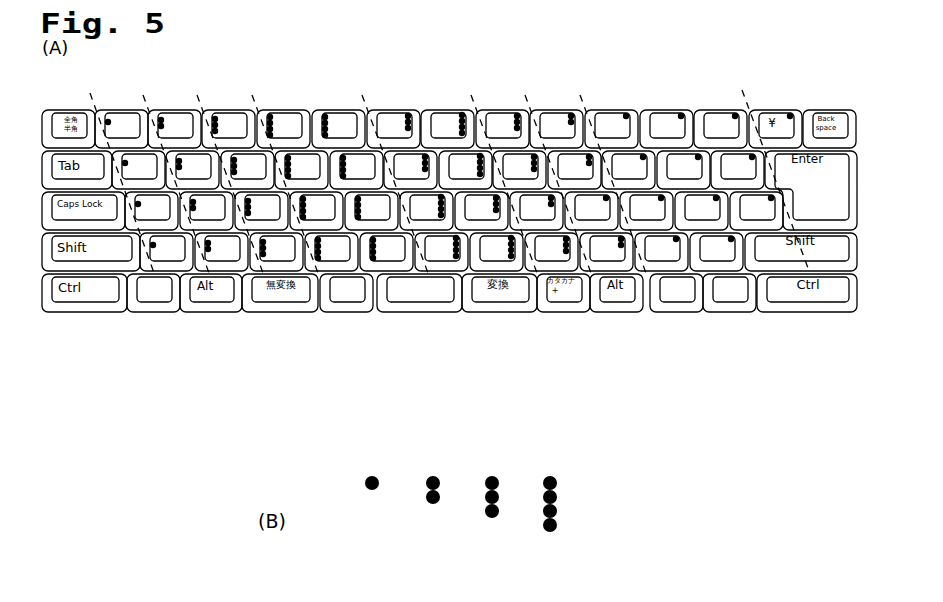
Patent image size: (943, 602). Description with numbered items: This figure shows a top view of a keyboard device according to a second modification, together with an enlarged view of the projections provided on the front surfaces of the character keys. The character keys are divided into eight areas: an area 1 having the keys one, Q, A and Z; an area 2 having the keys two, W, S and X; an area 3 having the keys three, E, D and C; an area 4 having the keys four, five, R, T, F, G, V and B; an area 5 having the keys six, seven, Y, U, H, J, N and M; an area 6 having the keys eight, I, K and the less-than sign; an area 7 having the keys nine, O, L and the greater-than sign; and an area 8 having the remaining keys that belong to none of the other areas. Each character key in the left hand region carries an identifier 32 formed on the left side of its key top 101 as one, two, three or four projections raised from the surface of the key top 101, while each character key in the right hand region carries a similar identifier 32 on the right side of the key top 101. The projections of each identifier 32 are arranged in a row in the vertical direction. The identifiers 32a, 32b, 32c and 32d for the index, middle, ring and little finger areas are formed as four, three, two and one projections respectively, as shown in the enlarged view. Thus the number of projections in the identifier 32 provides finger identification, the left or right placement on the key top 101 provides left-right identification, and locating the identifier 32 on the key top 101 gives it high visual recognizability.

The area 1 is at (148, 85).
The area 2 is at (150, 85).
The area 3 is at (250, 85).
The area 4 is at (252, 85).
The area 5 is at (463, 85).
The area 6 is at (520, 85).
The area 7 is at (578, 85).
The area 8 is at (732, 85).
The identifier 32 is at (392, 353).
The identifier 32a is at (154, 248).
The identifier 32b is at (208, 250).
The identifier 32c is at (263, 255).
The identifier 32d is at (318, 258).
The key top 101 is at (410, 283).